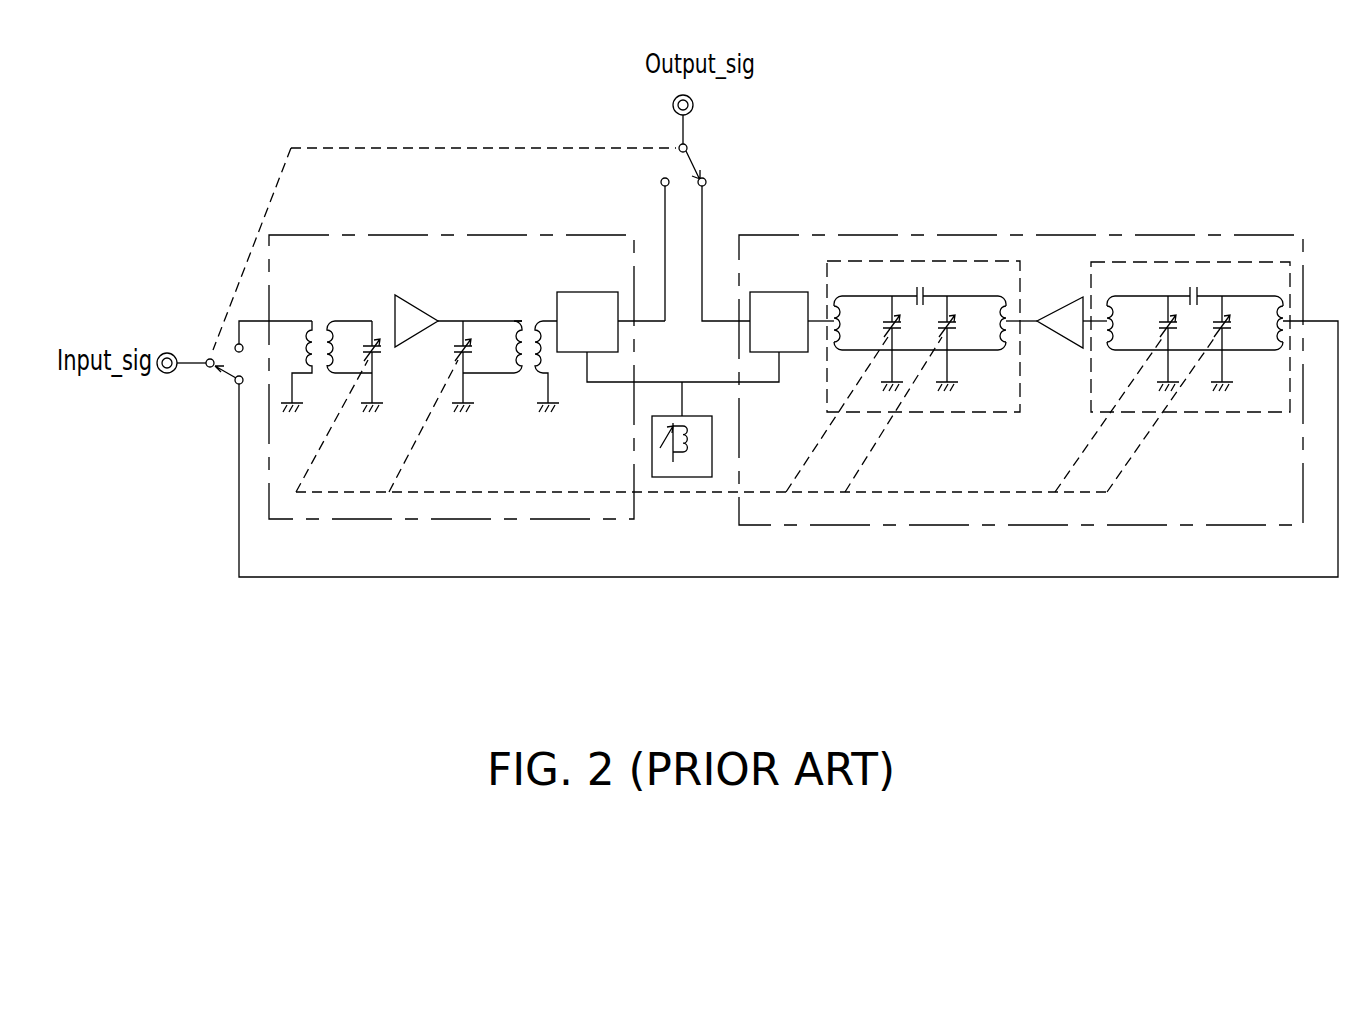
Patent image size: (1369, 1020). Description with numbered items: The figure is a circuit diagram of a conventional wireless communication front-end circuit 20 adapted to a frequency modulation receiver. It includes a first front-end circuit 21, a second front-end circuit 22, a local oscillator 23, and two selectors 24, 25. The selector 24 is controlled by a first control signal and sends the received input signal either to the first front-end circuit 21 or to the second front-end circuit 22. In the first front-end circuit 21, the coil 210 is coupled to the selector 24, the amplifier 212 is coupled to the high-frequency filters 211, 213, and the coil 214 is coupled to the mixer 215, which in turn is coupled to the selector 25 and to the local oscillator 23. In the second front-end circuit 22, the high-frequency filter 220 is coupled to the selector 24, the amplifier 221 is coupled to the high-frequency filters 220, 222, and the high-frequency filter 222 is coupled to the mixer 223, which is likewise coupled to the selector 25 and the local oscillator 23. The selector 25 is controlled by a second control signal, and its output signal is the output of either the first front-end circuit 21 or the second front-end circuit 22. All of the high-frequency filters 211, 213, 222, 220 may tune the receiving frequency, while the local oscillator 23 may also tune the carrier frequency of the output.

The wireless communication front-end circuit 20 is at (1214, 682).
The first front-end circuit 21 is at (393, 234).
The coil 210 is at (309, 388).
The high-frequency filter 211 is at (352, 319).
The amplifier 212 is at (415, 294).
The high-frequency filter 213 is at (490, 319).
The coil 214 is at (532, 376).
The mixer 215 is at (588, 291).
The second front-end circuit 22 is at (1065, 234).
The high-frequency filter 220 is at (1236, 413).
The amplifier 221 is at (1057, 349).
The high-frequency filter 222 is at (908, 413).
The mixer 223 is at (770, 291).
The local oscillator 23 is at (683, 478).
The selector 24 is at (205, 332).
The selector 25 is at (714, 143).